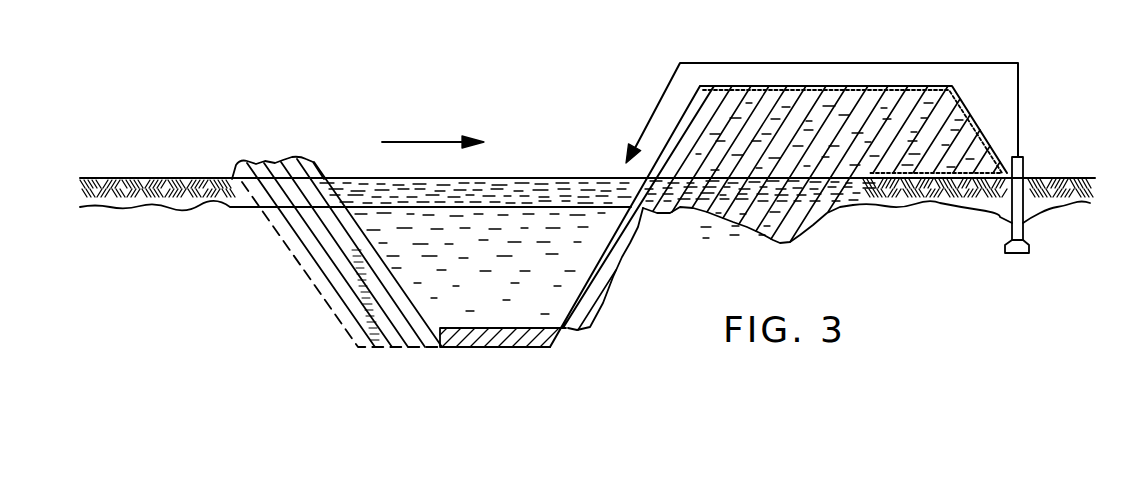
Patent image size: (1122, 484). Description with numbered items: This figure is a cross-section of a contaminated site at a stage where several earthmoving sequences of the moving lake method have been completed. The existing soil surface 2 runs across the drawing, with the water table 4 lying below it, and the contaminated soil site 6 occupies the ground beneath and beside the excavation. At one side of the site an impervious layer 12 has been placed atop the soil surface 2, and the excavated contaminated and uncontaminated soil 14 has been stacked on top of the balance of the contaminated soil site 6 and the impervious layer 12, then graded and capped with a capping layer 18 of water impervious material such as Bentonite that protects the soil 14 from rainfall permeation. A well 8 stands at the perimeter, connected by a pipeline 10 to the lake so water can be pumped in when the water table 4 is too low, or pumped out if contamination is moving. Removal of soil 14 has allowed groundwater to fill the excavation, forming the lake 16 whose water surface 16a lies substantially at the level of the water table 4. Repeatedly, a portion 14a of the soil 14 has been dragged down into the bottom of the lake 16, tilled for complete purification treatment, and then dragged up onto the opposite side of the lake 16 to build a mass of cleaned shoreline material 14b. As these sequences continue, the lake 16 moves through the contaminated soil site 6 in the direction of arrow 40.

The soil surface 2 is at (173, 178).
The water table 4 is at (167, 210).
The contaminated soil site 6 is at (766, 238).
The well 8 is at (1024, 165).
The pipeline 10 is at (980, 63).
The impervious layer 12 is at (927, 184).
The soil 14 is at (775, 112).
The portion of soil 14a is at (497, 347).
The cleaned shoreline material 14b is at (333, 249).
The lake 16 is at (445, 258).
The water surface 16a is at (493, 207).
The capping layer 18 is at (891, 88).
The arrow 40 is at (430, 142).